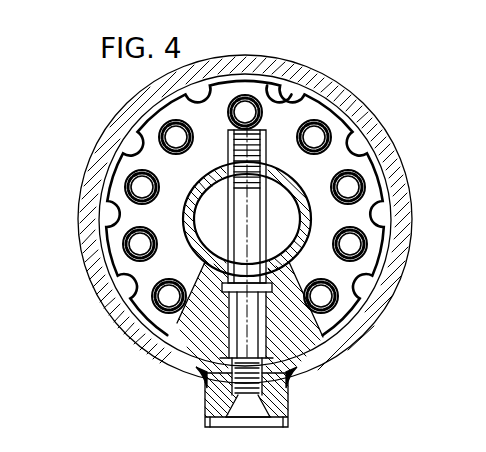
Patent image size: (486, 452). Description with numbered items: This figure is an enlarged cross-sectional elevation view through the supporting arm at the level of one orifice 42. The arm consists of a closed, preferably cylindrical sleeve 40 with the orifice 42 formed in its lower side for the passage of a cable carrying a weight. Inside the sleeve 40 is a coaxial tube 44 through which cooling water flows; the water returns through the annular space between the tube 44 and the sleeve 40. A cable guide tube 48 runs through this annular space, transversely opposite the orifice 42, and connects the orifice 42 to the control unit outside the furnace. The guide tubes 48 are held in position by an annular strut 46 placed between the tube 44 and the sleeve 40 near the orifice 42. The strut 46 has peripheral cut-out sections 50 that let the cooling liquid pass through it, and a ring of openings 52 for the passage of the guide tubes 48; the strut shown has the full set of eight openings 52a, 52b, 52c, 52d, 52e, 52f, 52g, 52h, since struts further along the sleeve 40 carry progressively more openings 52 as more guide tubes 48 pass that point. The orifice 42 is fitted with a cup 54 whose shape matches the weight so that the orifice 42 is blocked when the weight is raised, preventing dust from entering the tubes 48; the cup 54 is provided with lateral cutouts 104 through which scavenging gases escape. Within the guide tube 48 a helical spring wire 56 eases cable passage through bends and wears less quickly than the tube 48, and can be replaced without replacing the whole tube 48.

The closed sleeve 40 is at (400, 267).
The orifice 42 is at (203, 377).
The coaxial tube 44 is at (300, 183).
The annular strut 46 is at (280, 90).
The cable guide tube 48 is at (165, 350).
The peripheral cut-out section 50 is at (385, 212).
The opening 52 is at (250, 93).
The opening 52a is at (158, 307).
The opening 52b is at (339, 298).
The opening 52c is at (124, 246).
The opening 52d is at (368, 247).
The opening 52e is at (128, 177).
The opening 52f is at (366, 186).
The opening 52g is at (168, 124).
The opening 52h is at (320, 123).
The cup 54 is at (232, 420).
The helical spring wire 56 is at (292, 378).
The lateral cutout 104 is at (283, 421).